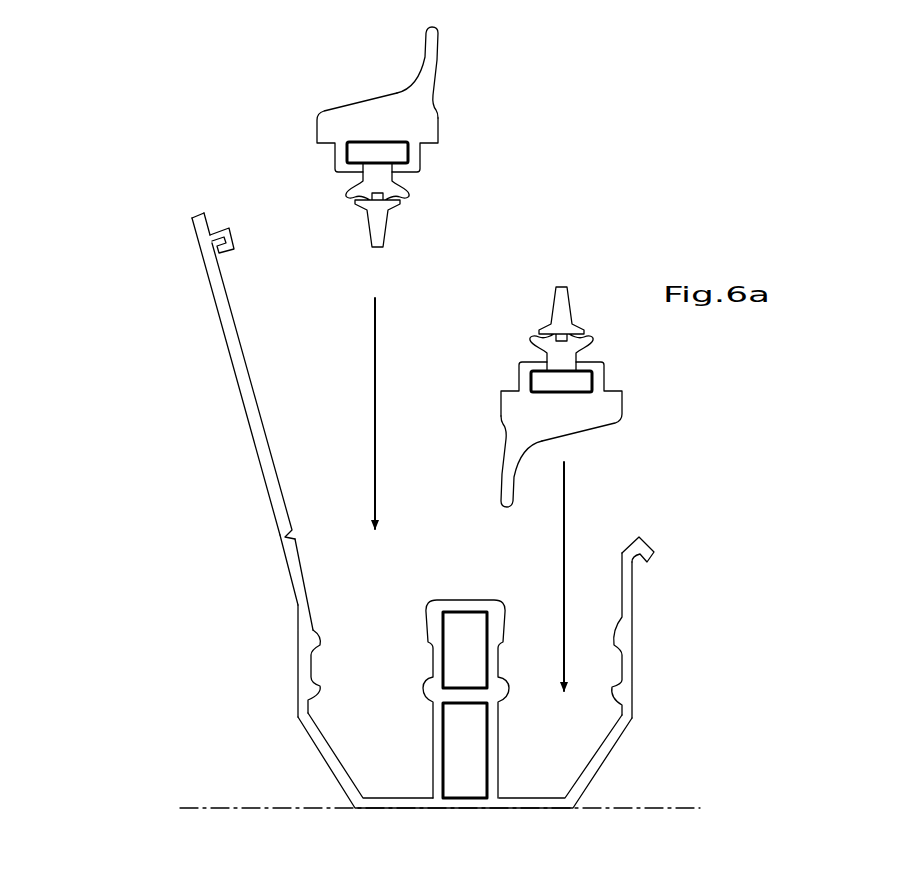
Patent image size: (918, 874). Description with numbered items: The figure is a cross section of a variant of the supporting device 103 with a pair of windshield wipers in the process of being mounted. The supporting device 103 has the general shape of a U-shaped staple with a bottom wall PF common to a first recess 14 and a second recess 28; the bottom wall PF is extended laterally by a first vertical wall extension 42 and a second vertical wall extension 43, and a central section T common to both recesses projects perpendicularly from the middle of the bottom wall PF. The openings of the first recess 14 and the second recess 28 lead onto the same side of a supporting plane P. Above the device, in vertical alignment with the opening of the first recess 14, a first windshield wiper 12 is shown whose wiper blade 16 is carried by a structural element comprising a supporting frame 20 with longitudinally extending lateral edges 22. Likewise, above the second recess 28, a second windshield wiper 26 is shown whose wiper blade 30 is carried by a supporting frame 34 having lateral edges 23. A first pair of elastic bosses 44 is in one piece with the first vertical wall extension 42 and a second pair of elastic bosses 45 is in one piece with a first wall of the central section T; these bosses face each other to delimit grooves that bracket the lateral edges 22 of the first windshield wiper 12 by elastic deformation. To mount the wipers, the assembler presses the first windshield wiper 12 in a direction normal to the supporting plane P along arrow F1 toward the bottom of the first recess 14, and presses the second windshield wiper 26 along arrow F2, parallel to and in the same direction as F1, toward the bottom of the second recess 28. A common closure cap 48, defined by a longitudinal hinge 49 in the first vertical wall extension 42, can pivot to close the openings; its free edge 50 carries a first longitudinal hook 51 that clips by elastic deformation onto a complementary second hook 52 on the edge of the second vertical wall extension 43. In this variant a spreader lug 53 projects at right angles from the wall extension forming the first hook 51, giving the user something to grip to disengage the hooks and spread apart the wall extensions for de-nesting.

The first windshield wiper 12 is at (378, 133).
The supporting frame 20 is at (422, 75).
The lateral edges 22 is at (323, 133).
The wiper blade 16 is at (377, 215).
The second windshield wiper 26 is at (560, 348).
The wiper blade 30 is at (558, 312).
The lateral edges 23 is at (507, 405).
The supporting frame 34 is at (510, 461).
The free edge 50 is at (189, 353).
The spreader lug 53 is at (200, 213).
The first longitudinal hook 51 is at (222, 227).
The common closure cap 48 is at (247, 425).
The longitudinal hinge 49 is at (280, 538).
The first vertical wall extension 42 is at (309, 628).
The first pair of elastic bosses 44 is at (315, 687).
The second pair of elastic bosses 45 is at (425, 637).
The first recess 14 is at (377, 747).
The second recess 28 is at (562, 772).
The second vertical wall extension 43 is at (628, 670).
The second hook 52 is at (653, 553).
The supporting device 103 is at (425, 517).
The central section T is at (454, 709).
The bottom wall PF is at (408, 810).
The supporting plane P is at (220, 806).
The arrow F1 is at (355, 413).
The arrow F2 is at (617, 566).